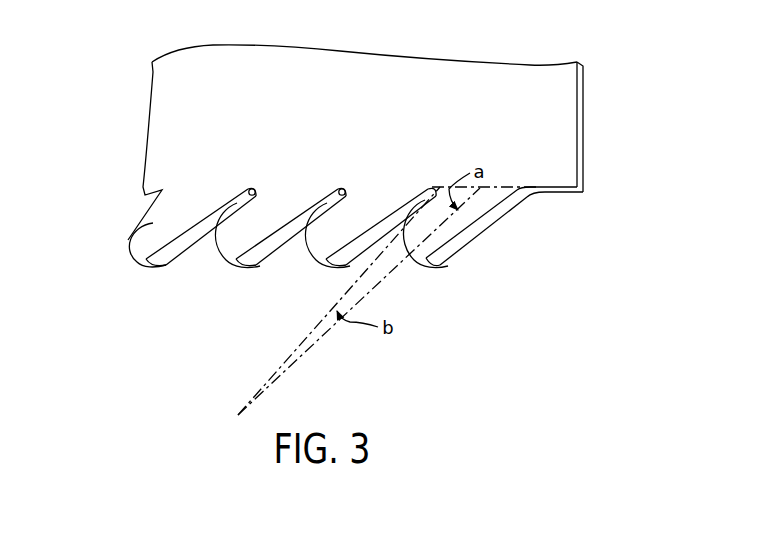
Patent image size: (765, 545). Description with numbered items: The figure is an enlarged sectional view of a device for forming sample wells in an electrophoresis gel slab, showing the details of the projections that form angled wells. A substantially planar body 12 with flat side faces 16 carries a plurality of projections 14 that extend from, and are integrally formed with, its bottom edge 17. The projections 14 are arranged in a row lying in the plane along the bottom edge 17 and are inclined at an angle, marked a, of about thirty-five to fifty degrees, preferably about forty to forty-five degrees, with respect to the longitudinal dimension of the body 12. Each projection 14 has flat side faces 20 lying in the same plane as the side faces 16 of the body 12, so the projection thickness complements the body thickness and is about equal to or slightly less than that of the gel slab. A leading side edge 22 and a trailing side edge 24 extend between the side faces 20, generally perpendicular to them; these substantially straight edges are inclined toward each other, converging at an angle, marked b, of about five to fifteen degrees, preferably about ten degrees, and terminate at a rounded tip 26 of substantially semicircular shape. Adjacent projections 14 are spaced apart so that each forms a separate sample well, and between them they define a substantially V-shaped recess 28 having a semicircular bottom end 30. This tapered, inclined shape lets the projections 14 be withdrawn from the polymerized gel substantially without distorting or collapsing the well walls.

The body 12 is at (377, 142).
The projections 14 is at (306, 245).
The side faces 16 is at (566, 97).
The bottom edge 17 is at (550, 193).
The side faces 20 is at (152, 229).
The leading side edge 22 is at (143, 213).
The trailing side edge 24 is at (178, 247).
The tip 26 is at (145, 263).
The V-shaped recess 28 is at (308, 232).
The semicircular bottom end 30 is at (255, 196).